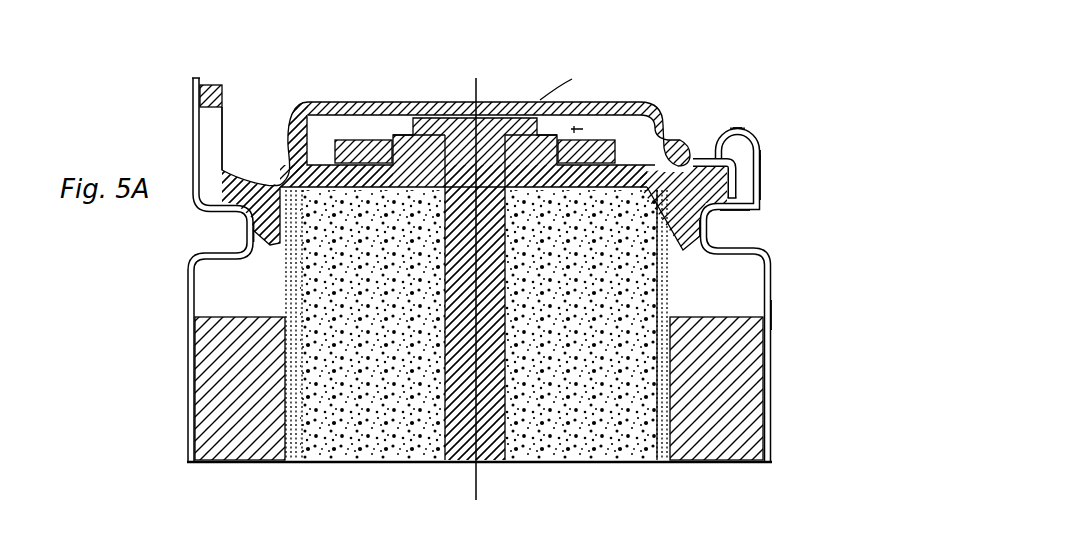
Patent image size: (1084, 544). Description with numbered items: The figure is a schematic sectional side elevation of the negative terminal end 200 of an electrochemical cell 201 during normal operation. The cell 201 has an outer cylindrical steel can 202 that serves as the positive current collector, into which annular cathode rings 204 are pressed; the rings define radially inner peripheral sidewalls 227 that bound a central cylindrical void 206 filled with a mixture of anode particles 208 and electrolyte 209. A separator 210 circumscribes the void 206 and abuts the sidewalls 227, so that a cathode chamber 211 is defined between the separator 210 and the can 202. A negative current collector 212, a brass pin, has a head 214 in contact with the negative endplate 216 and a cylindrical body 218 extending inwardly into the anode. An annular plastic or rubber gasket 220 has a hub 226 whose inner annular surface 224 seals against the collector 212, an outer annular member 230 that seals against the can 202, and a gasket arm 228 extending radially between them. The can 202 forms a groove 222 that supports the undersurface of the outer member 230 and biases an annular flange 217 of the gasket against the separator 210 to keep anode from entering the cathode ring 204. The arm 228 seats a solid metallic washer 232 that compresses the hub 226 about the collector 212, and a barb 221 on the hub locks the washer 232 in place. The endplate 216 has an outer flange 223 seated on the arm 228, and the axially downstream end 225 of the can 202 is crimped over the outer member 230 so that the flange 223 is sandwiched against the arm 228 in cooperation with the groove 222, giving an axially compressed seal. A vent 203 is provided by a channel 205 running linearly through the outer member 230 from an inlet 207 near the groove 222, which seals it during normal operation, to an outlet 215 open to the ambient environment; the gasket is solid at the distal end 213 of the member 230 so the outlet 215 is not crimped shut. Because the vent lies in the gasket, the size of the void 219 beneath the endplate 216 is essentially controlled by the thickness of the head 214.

The negative terminal end 200 is at (345, 98).
The electrochemical cell 201 is at (724, 46).
The outer cylindrical steel can 202 is at (770, 316).
The vent 203 is at (768, 138).
The cathode ring 204 is at (770, 368).
The channel 205 is at (752, 131).
The cylindrical void 206 is at (592, 364).
The inlet 207 is at (757, 209).
The anode particles 208 is at (644, 447).
The electrolyte 209 is at (612, 457).
The separator 210 is at (668, 280).
The cathode chamber 211 is at (757, 293).
The negative current collector 212 is at (440, 417).
The distal end 213 is at (678, 140).
The head 214 is at (577, 112).
The outlet 215 is at (700, 157).
The negative endplate 216 is at (415, 100).
The annular flange 217 is at (258, 250).
The cylindrical body 218 is at (516, 427).
The void 219 is at (334, 138).
The gasket 220 is at (318, 160).
The barb 221 is at (390, 135).
The groove 222 is at (705, 233).
The outer flange 223 is at (247, 177).
The inner annular surface 224 is at (443, 165).
The axially downstream end 225 is at (750, 128).
The hub 226 is at (435, 205).
The radially inner peripheral sidewall 227 is at (307, 450).
The gasket arm 228 is at (338, 170).
The outer annular member 230 is at (760, 177).
The washer 232 is at (657, 106).